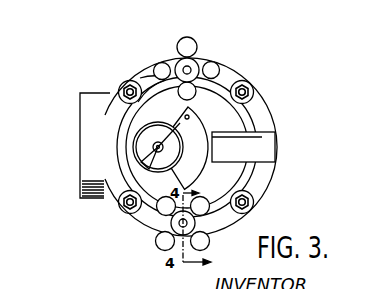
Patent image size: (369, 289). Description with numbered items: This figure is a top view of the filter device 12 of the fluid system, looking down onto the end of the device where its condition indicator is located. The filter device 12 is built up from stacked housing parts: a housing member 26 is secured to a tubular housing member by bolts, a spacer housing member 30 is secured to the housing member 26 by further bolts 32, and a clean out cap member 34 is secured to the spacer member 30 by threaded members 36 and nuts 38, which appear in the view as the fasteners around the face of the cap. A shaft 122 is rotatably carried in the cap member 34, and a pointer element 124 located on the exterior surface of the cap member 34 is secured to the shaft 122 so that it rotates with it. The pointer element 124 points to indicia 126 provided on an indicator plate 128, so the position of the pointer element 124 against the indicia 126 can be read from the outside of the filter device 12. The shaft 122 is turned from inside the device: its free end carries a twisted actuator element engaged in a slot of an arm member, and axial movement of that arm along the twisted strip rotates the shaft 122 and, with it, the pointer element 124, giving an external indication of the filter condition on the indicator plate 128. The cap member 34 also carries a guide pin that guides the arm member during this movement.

The filter device 12 is at (242, 64).
The housing member 26 is at (266, 120).
The spacer housing member 30 is at (245, 166).
The bolt 32 is at (129, 82).
The clean out cap member 34 is at (160, 72).
The threaded members 36 is at (191, 68).
The nuts 38 is at (193, 40).
The shaft 122 is at (156, 146).
The pointer element 124 is at (141, 152).
The indicia 126 is at (276, 137).
The indicator plate 128 is at (113, 200).